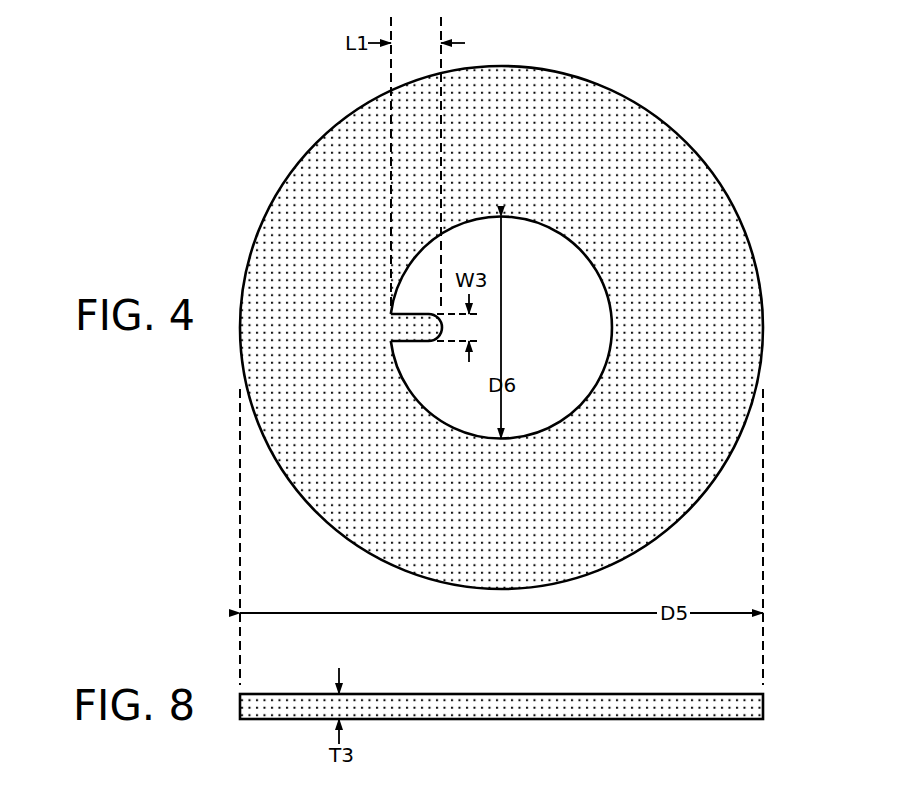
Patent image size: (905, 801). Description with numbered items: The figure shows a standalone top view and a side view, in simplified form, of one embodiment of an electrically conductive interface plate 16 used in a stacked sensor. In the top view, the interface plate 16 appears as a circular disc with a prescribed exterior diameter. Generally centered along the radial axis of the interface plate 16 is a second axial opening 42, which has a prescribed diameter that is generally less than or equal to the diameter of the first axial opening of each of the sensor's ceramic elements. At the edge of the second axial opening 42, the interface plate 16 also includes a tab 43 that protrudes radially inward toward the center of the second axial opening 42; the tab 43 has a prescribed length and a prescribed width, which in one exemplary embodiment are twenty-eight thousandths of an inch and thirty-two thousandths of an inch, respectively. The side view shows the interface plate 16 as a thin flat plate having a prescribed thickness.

In FIG. 4, the electrically conductive interface plate 16 is at (240, 137).
In FIG. 8, the electrically conductive interface plate 16 is at (210, 655).
In FIG. 4, the second axial opening 42 is at (562, 340).
In FIG. 4, the tab 43 is at (418, 345).